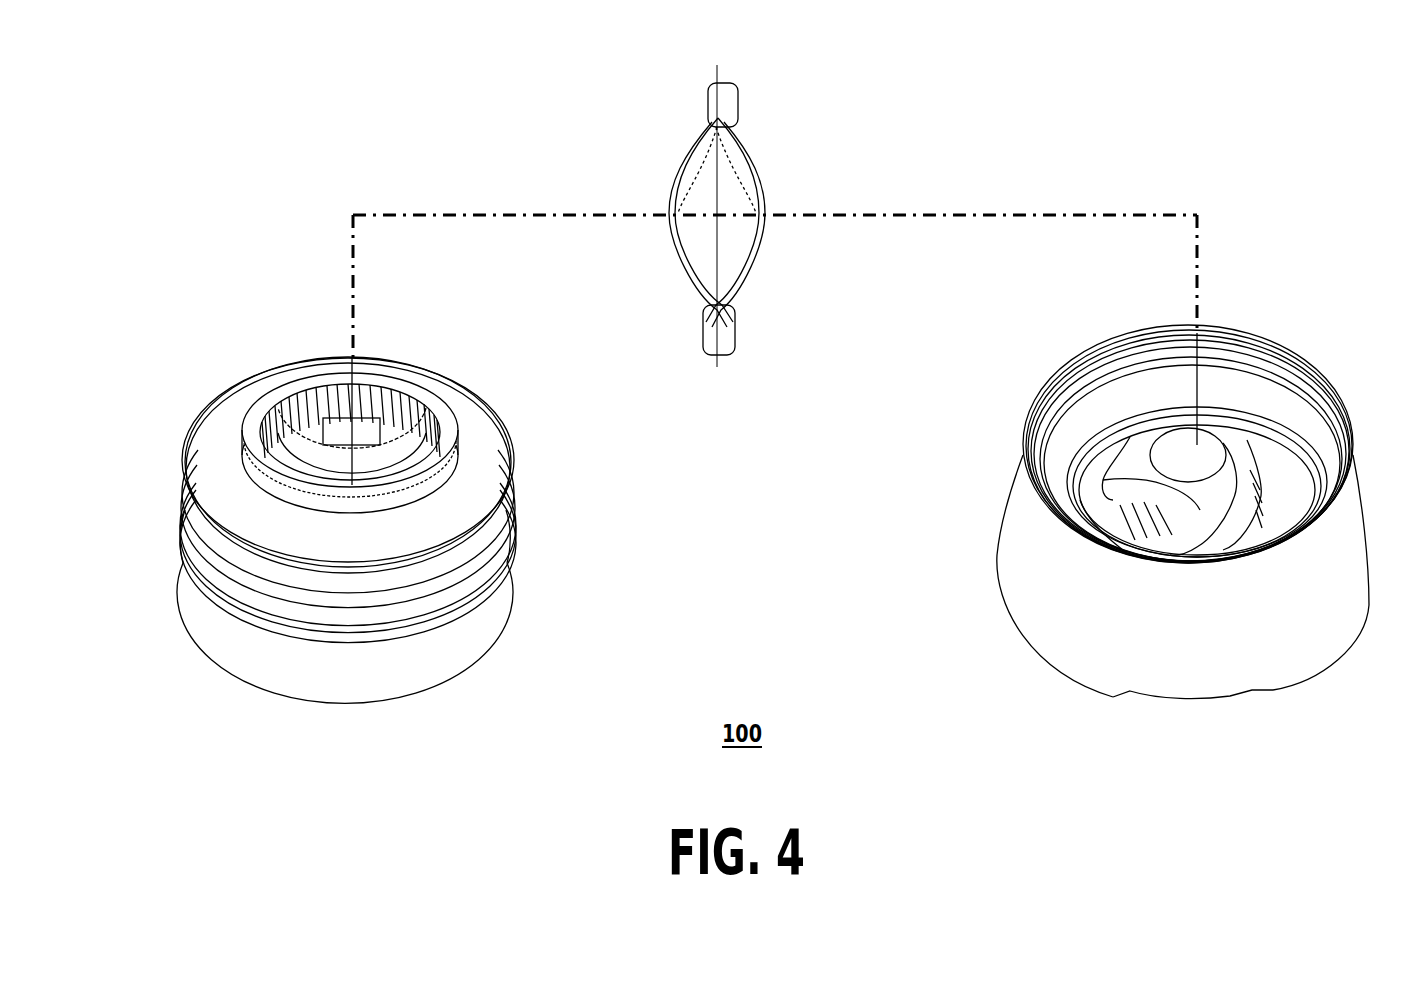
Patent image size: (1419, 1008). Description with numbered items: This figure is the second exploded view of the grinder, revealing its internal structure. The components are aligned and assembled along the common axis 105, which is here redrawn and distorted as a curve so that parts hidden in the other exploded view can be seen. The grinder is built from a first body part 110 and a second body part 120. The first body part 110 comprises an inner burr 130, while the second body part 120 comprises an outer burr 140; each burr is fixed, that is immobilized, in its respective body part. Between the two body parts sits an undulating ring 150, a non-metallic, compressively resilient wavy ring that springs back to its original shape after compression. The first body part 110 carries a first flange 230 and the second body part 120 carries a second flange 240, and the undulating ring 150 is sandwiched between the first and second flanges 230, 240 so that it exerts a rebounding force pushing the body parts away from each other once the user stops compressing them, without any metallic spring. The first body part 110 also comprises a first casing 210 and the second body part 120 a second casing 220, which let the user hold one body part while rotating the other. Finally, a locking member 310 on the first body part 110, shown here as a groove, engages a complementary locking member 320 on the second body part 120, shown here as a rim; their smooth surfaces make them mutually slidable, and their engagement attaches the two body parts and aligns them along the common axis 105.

The common axis 105 is at (997, 213).
The first body part 110 is at (1160, 529).
The second body part 120 is at (344, 555).
The inner burr 130 is at (1228, 440).
The outer burr 140 is at (433, 430).
The undulating ring 150 is at (740, 158).
The first casing 210 is at (1008, 568).
The second casing 220 is at (450, 639).
The first flange 230 is at (1055, 480).
The second flange 240 is at (235, 470).
The locking member 310 is at (1255, 373).
The complementary locking member 320 is at (286, 586).